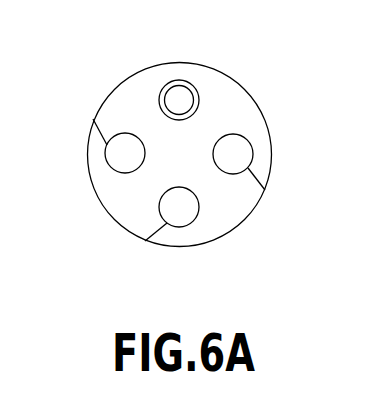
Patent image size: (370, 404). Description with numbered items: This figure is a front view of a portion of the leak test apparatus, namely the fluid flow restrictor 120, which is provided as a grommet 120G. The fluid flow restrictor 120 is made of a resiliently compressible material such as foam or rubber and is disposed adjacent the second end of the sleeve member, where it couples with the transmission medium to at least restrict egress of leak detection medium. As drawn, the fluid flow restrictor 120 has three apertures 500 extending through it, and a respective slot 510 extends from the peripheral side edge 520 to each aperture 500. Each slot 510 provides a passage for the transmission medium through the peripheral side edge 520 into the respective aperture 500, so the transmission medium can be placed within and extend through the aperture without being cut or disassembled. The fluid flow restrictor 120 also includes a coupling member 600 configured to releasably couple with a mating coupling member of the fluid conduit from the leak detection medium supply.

The fluid flow restrictor 120 is at (152, 123).
The grommet 120G is at (155, 63).
The apertures 500 is at (110, 167).
The slot 510 is at (88, 136).
The peripheral side edge 520 is at (250, 219).
The coupling member 600 is at (186, 82).